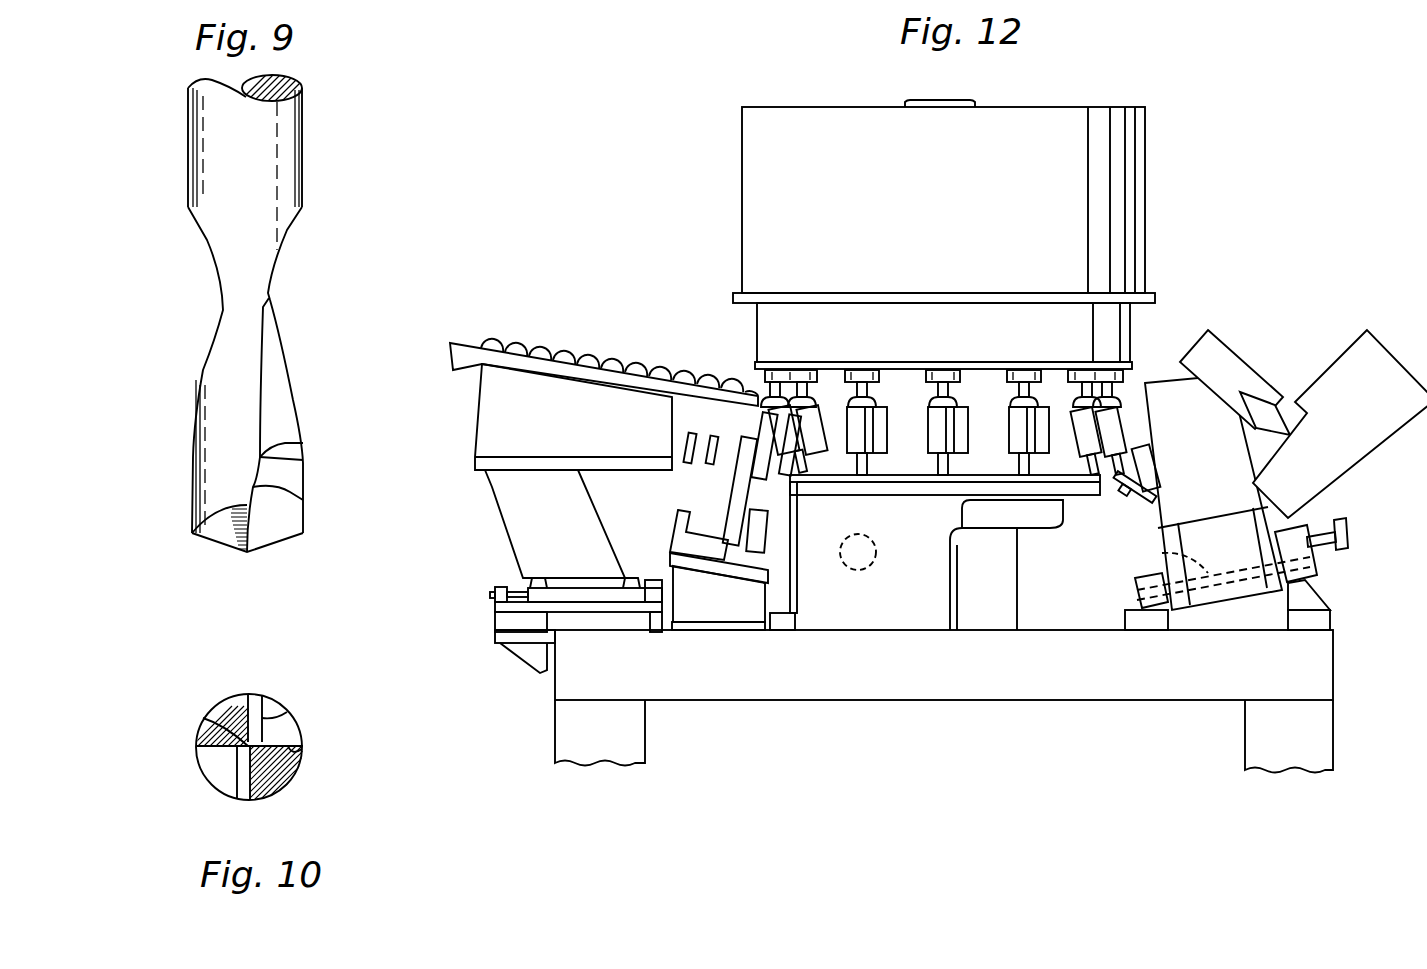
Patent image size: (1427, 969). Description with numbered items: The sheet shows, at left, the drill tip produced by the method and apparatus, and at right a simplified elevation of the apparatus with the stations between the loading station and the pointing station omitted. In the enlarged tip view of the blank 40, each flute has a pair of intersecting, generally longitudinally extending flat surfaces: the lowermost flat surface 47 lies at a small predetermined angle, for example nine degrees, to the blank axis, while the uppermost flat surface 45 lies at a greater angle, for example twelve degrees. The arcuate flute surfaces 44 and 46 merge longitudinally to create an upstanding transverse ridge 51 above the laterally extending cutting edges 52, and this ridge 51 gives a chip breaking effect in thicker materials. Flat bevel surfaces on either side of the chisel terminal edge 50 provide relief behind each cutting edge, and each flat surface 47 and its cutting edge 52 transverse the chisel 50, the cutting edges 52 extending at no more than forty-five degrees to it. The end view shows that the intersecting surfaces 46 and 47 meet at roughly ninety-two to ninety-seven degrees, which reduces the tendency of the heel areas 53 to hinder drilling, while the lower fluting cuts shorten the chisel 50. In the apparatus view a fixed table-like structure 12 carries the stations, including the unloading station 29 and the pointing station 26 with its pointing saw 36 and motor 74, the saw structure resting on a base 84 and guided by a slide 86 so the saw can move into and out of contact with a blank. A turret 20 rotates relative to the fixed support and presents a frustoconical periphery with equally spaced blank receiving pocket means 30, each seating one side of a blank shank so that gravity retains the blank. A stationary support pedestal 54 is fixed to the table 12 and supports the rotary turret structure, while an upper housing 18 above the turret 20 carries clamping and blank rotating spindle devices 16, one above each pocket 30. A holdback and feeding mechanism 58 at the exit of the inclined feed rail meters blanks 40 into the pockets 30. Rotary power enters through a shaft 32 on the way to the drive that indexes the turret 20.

In FIG. 12, the fixed table-like structure 12 is at (1310, 652).
In FIG. 12, the clamping and blank rotating spindle devices 16 is at (1000, 381).
In FIG. 12, the drive housing 18 is at (777, 107).
In FIG. 12, the turret 20 is at (905, 447).
In FIG. 12, the pointing station 26 is at (1262, 363).
In FIG. 12, the unloading station 29 is at (720, 358).
In FIG. 12, the blank receiving pocket means 30 is at (783, 452).
In FIG. 12, the shaft 32 is at (865, 571).
In FIG. 12, the pointing saw 36 is at (1140, 503).
In FIG. 9, the drill blank 40 is at (188, 148).
In FIG. 12, the drill blank 40 is at (612, 362).
In FIG. 9, the arcuate flute surface 44 is at (278, 268).
In FIG. 9, the uppermost flat surface 45 is at (280, 397).
In FIG. 9, the arcuate flute surface 46 is at (293, 493).
In FIG. 9, the lowermost flat surface 47 is at (290, 480).
In FIG. 9, the chisel terminal edge 50 is at (250, 553).
In FIG. 10, the chisel terminal edge 50 is at (208, 716).
In FIG. 9, the upstanding transverse ridge 51 is at (280, 446).
In FIG. 10, the upstanding transverse ridge 51 is at (287, 712).
In FIG. 9, the cutting edges 52 is at (283, 543).
In FIG. 10, the cutting edges 52 is at (297, 755).
In FIG. 10, the heel areas 53 is at (238, 707).
In FIG. 12, the stationary support pedestal 54 is at (1020, 573).
In FIG. 12, the holdback and feeding mechanism 58 is at (738, 485).
In FIG. 12, the motor 74 is at (1400, 330).
In FIG. 12, the mounting base 84 is at (1125, 620).
In FIG. 12, the slide guide 86 is at (1162, 553).